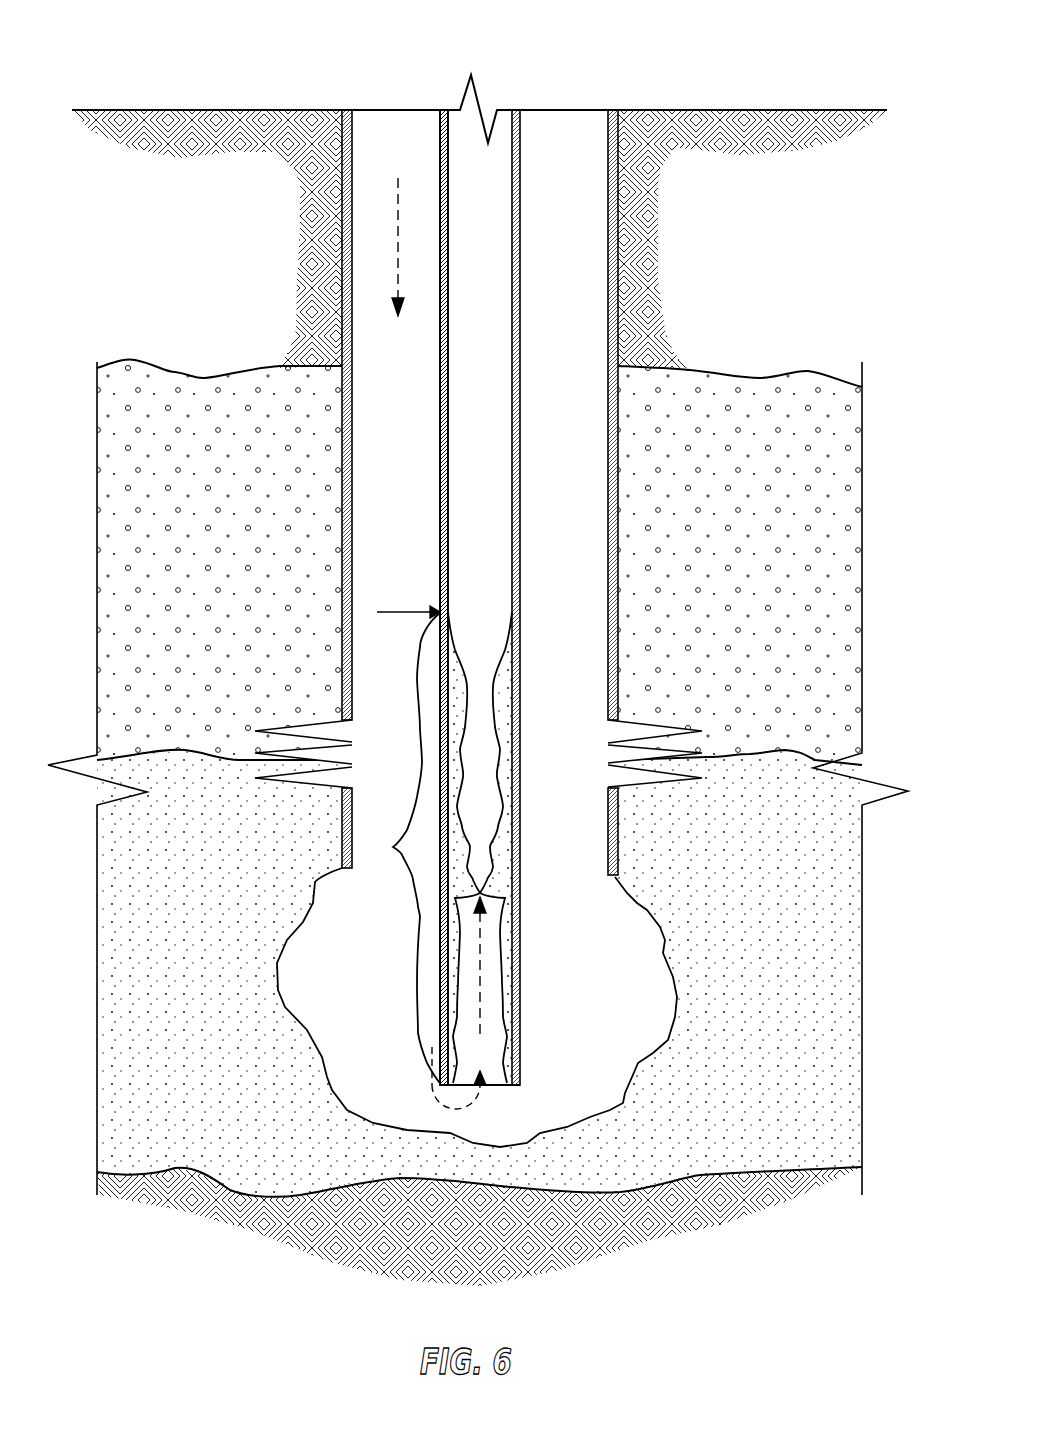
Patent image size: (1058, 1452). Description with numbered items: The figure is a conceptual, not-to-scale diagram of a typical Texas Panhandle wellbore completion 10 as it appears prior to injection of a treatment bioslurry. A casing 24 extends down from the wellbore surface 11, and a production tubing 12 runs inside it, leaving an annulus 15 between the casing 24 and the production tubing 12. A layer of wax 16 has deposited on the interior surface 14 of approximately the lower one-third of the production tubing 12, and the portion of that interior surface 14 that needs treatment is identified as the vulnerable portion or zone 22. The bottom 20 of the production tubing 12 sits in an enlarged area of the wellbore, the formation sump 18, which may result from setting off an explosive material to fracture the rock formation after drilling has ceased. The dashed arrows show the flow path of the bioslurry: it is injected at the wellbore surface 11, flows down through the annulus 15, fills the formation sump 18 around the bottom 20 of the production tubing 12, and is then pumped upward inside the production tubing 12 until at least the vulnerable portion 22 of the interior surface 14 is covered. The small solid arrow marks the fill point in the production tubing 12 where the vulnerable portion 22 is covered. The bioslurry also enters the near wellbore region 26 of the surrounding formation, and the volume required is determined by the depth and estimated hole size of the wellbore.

The well system 10 is at (578, 38).
The wellbore surface 11 is at (397, 125).
The production tubing 12 is at (520, 507).
The interior surface 14 is at (448, 447).
The annulus 15 is at (408, 546).
The layer of wax 16 is at (507, 707).
The formation sump 18 is at (602, 1088).
The bottom of the production tubing 20 is at (520, 1085).
The vulnerable portion or zone 22 is at (398, 848).
The casing 24 is at (345, 450).
The near wellbore region 26 is at (625, 848).